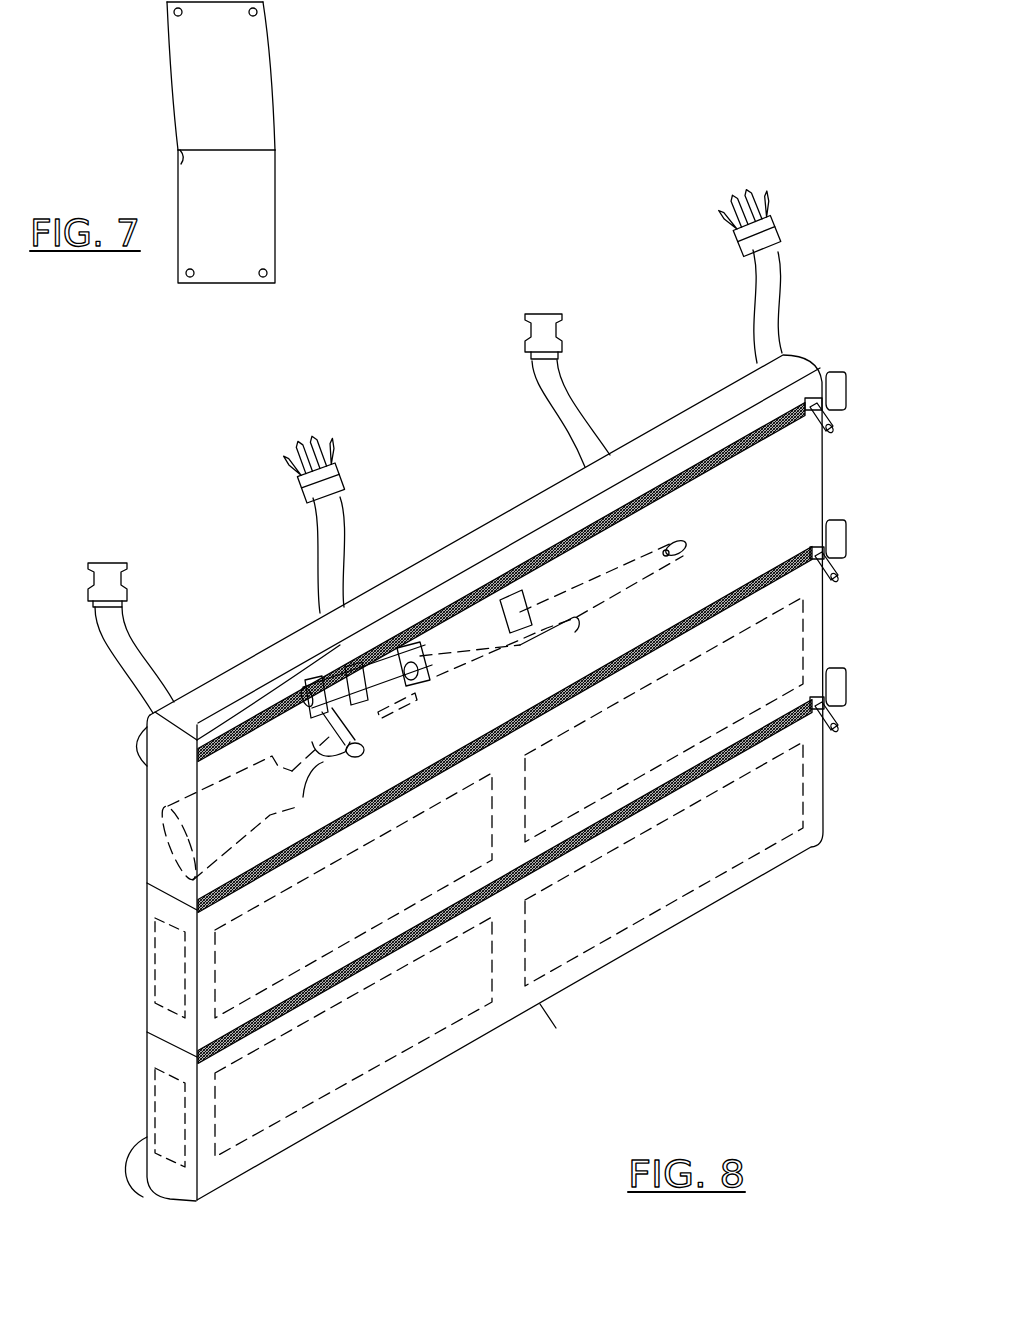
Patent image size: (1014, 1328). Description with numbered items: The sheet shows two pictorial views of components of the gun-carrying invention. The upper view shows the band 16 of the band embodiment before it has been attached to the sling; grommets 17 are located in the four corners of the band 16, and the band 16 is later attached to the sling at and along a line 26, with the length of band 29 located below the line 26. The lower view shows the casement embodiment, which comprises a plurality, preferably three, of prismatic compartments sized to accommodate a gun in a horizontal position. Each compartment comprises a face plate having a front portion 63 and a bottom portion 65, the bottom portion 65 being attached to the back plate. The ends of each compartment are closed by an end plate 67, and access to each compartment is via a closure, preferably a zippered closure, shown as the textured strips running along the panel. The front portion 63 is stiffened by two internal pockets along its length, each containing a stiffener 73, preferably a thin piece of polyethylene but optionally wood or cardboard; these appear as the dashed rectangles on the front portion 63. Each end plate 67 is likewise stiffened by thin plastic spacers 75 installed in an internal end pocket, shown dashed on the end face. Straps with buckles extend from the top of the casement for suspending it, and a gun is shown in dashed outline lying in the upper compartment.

In FIG. 7, the band 16 is at (276, 97).
In FIG. 7, the grommets 17 is at (174, 12).
In FIG. 7, the line 26 is at (181, 162).
In FIG. 7, the length of band 29 is at (277, 205).
In FIG. 8, the front portion 63 is at (821, 488).
In FIG. 8, the bottom portion 65 is at (552, 1006).
In FIG. 8, the end plate 67 is at (150, 838).
In FIG. 8, the stiffener 73 is at (340, 1090).
In FIG. 8, the plastic spacers 75 is at (155, 1107).